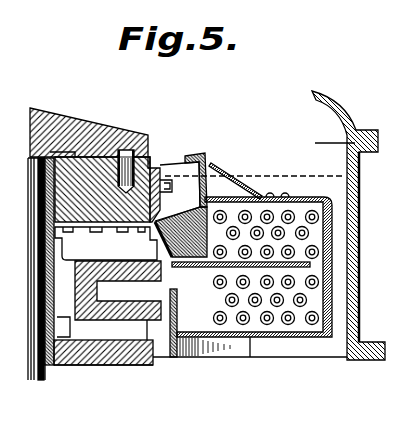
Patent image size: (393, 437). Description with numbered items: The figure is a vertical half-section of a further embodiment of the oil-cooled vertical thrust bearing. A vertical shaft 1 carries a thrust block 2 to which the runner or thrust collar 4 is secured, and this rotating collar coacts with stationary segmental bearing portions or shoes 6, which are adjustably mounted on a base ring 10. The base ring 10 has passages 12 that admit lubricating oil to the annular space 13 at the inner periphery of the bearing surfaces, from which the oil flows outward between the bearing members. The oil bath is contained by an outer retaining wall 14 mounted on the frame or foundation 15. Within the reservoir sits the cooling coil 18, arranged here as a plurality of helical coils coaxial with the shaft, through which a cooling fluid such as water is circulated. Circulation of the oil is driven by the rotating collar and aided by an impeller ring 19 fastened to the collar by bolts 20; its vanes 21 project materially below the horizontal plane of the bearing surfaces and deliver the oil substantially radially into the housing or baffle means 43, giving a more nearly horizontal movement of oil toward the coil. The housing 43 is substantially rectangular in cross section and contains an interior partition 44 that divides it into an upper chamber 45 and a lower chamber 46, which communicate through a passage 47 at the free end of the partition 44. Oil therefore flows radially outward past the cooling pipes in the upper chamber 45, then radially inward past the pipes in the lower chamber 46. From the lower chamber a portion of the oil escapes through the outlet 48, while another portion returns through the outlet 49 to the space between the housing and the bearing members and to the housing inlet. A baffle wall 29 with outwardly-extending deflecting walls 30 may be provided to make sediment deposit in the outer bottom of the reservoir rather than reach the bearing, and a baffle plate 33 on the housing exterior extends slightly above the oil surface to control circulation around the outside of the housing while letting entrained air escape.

The vertical shaft 1 is at (33, 380).
The thrust block 2 is at (63, 125).
The runner or thrust collar 4 is at (89, 243).
The segmental bearing portions or shoes 6 is at (148, 162).
The base ring 10 is at (133, 365).
The passages 12 is at (108, 335).
The annular space 13 is at (65, 303).
The outer retaining wall 14 is at (360, 188).
The frame or foundation 15 is at (387, 297).
The cooling coil 18 is at (313, 278).
The impeller ring 19 is at (205, 155).
The bolts 20 is at (168, 178).
The vanes 21 is at (183, 220).
The baffle wall 29 is at (168, 353).
The deflecting walls 30 is at (238, 345).
The baffle plate 33 is at (222, 167).
The housing or baffle means 43 is at (292, 196).
The interior partition 44 is at (232, 262).
The upper chamber 45 is at (303, 213).
The lower chamber 46 is at (278, 320).
The passage 47 is at (316, 288).
The outlet 48 is at (200, 336).
The outlet 49 is at (173, 281).